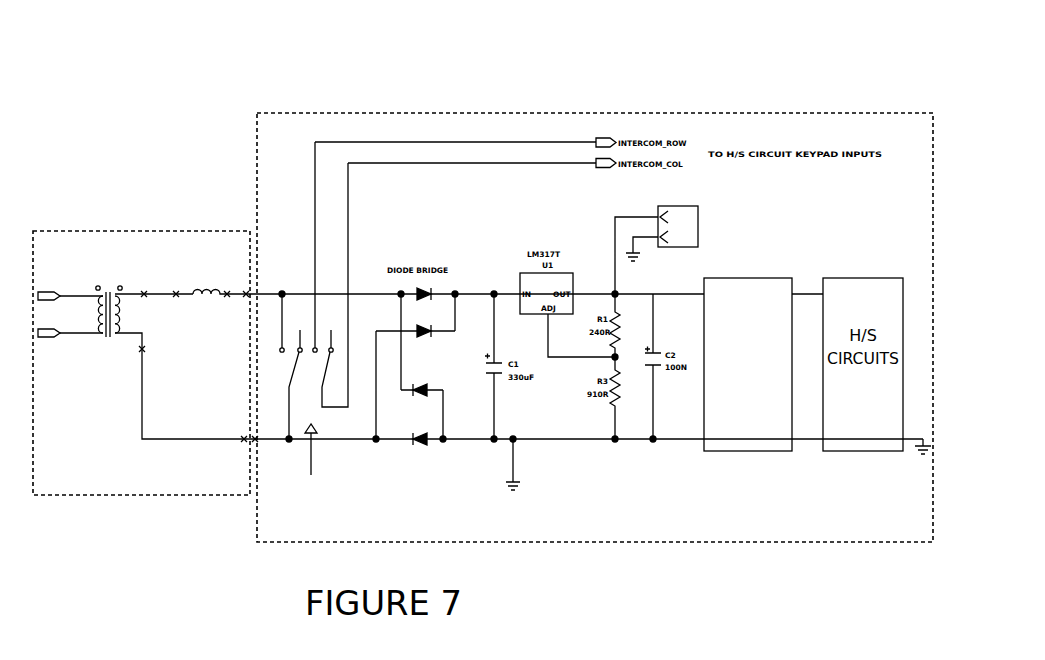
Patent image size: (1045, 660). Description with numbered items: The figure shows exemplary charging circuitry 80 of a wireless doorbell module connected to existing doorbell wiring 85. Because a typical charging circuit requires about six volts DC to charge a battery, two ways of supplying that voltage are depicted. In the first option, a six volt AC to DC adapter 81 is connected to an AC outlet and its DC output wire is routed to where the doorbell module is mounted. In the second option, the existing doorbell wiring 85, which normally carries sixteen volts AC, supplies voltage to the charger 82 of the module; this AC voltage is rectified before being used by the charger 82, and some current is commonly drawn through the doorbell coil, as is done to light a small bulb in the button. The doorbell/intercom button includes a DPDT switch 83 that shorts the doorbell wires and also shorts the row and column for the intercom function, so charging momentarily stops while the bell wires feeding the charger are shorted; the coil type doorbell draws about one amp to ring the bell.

The charging circuitry 80 is at (770, 82).
The 6V AC to DC adapter 81 is at (764, 250).
The charger 82 is at (742, 452).
The DPDT switch 83 is at (331, 331).
The existing doorbell wiring 85 is at (145, 334).